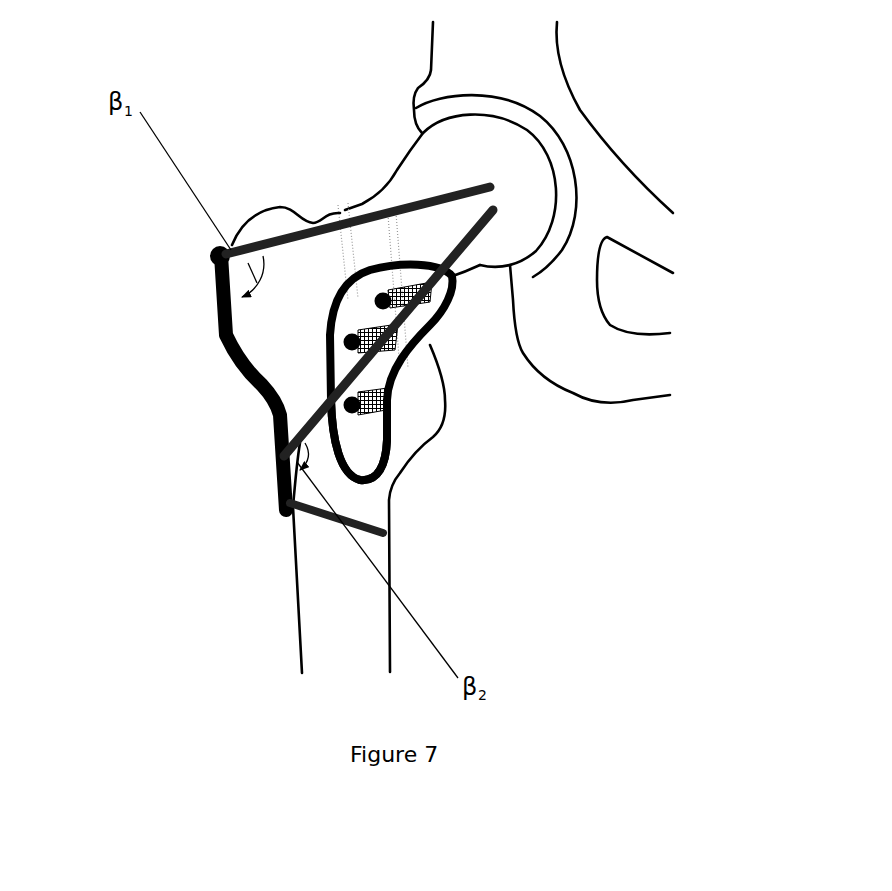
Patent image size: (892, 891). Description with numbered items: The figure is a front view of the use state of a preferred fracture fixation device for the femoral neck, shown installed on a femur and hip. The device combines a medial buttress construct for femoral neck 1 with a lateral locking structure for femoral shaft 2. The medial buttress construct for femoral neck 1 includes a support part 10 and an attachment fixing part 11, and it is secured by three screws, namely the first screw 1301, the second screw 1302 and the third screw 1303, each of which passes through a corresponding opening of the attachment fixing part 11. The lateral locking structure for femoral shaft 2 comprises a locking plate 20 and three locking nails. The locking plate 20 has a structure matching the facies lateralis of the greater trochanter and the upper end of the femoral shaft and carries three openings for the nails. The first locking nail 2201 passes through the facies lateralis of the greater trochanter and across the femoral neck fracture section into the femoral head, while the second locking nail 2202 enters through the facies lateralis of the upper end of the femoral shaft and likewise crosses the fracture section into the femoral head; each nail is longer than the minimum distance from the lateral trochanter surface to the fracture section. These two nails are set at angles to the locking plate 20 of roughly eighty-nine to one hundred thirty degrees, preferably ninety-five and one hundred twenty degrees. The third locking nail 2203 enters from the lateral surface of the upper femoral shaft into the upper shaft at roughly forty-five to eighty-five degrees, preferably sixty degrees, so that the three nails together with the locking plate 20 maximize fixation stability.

The medial buttress construct for femoral neck 1 is at (364, 264).
The lateral locking structure for femoral shaft 2 is at (280, 356).
The locking plate 20 is at (277, 414).
The first locking nail 2201 is at (280, 238).
The second locking nail 2202 is at (308, 420).
The third locking nail 2203 is at (313, 521).
The support part 10 is at (447, 300).
The attachment fixing part 11 is at (368, 460).
The first screw 1301 is at (413, 310).
The second screw 1302 is at (377, 343).
The third screw 1303 is at (386, 414).